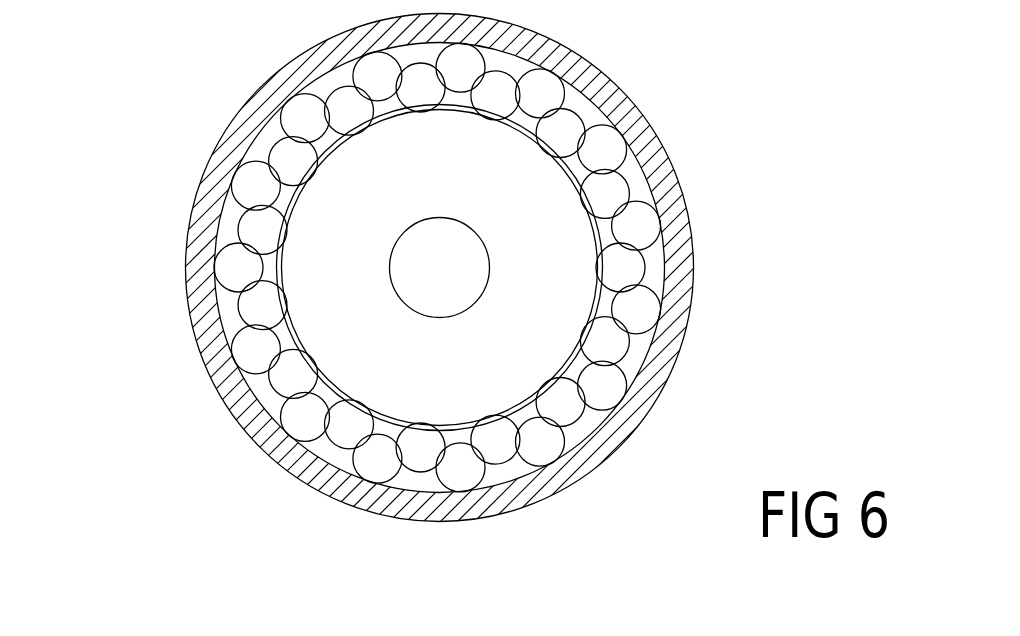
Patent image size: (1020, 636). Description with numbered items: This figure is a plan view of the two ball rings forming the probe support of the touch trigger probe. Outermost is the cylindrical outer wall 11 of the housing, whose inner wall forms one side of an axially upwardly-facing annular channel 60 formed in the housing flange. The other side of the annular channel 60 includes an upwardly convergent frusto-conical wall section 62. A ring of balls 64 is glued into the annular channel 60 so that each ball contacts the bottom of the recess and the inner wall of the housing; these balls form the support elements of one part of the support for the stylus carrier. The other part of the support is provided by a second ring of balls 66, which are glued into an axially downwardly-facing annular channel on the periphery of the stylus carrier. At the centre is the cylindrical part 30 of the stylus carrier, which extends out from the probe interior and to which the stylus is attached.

The cylindrical outer wall 11 is at (687, 310).
The cylindrical part 30 is at (427, 278).
The annular channel 60 is at (260, 140).
The frusto-conical wall section 62 is at (557, 162).
The ring of balls 64 is at (640, 228).
The second ring of balls 66 is at (260, 227).